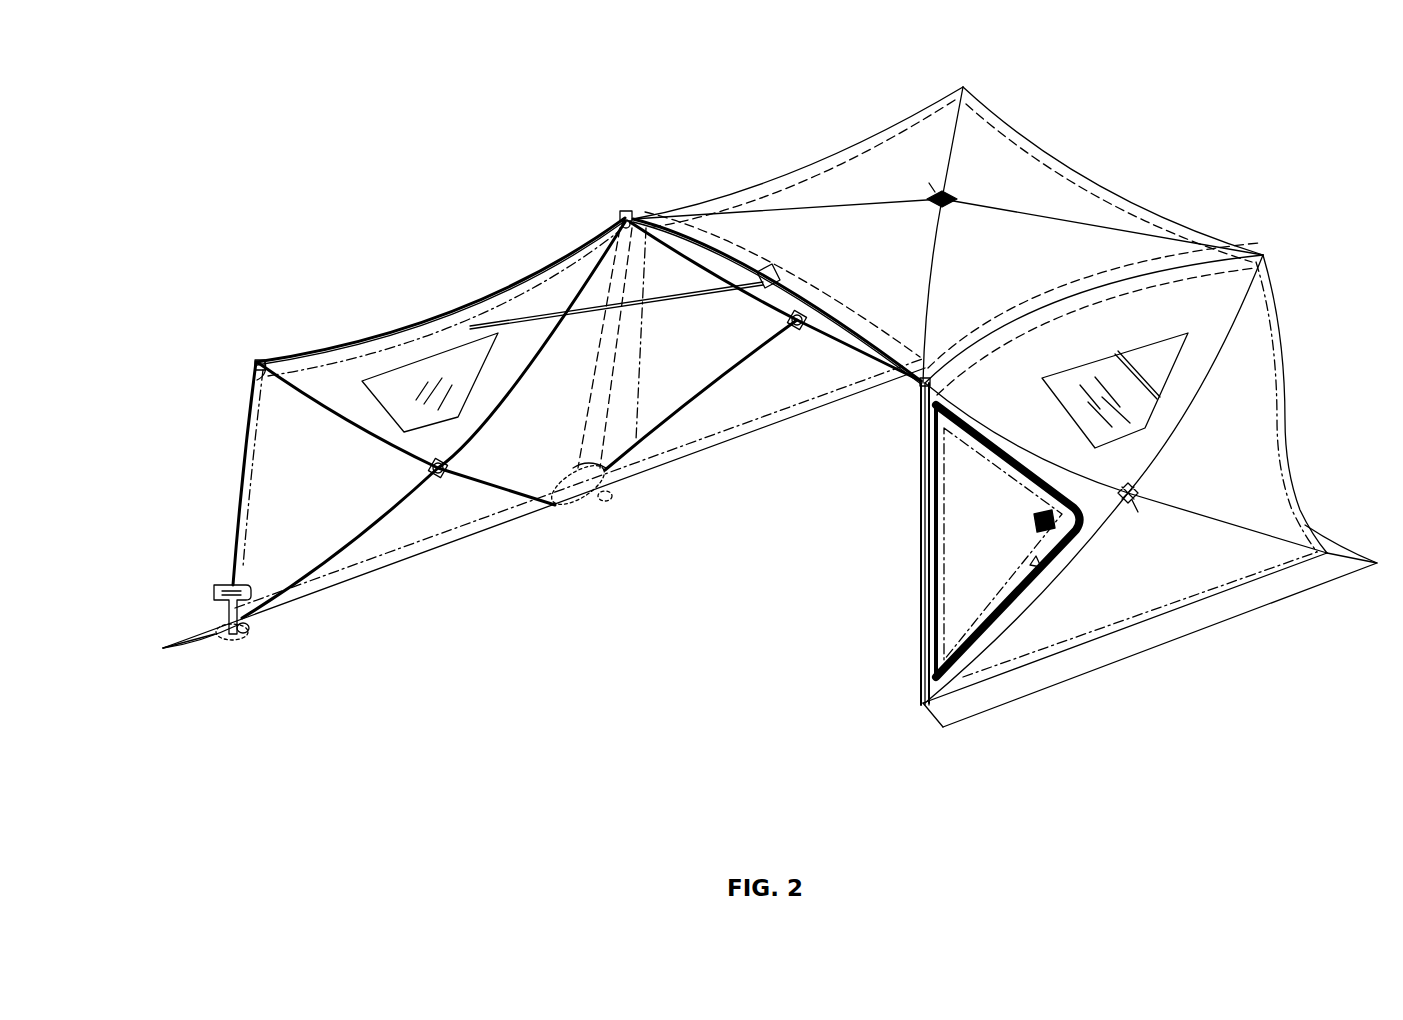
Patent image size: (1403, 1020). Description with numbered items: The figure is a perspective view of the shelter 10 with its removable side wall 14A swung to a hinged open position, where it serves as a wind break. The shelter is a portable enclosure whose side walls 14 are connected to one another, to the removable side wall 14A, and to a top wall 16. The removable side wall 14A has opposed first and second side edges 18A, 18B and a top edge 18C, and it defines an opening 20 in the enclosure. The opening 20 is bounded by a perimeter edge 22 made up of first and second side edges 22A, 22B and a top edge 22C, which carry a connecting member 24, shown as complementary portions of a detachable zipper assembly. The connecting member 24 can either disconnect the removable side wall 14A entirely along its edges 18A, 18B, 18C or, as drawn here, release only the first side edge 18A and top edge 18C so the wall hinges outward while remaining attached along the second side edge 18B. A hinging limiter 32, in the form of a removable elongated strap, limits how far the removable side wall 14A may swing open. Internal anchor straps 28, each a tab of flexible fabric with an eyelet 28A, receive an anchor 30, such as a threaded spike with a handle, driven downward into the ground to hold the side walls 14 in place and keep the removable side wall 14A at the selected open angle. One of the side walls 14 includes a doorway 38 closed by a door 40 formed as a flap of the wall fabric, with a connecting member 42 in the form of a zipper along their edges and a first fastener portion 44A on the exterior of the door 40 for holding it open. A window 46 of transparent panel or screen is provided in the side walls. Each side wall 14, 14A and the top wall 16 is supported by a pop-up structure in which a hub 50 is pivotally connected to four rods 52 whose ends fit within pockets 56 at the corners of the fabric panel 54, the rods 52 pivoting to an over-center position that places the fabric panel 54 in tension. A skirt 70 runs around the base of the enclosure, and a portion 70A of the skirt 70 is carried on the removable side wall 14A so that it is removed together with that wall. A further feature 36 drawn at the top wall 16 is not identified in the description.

The shelter 10 is at (1190, 66).
The side walls 14 is at (762, 392).
The removable side wall 14A is at (298, 373).
The top wall 16 is at (1045, 172).
The first side edge 18A is at (247, 493).
The second side edge 18B is at (616, 273).
The top edge 18C is at (346, 342).
The opening 20 is at (705, 237).
The perimeter edge 22 is at (920, 466).
The first side edge 22A is at (922, 537).
The second side edge 22B is at (605, 417).
The top edge 22C is at (917, 372).
The connecting member 24 is at (920, 620).
The internal anchor straps 28 is at (221, 633).
The eyelet 28A is at (245, 634).
The anchor 30 is at (232, 588).
The hinging limiter 32 is at (483, 320).
The roof hub 36 is at (936, 192).
The doorway 38 is at (1050, 530).
The door 40 is at (958, 627).
The connecting member 42 is at (1012, 607).
The first fastener portion 44A is at (1078, 527).
The window 46 is at (392, 390).
The hub 50 is at (443, 500).
The rods 52 is at (580, 297).
The fabric panel 54 is at (336, 504).
The pocket 56 is at (630, 214).
The skirt 70 is at (1320, 570).
The portion of the skirt 70A is at (182, 636).